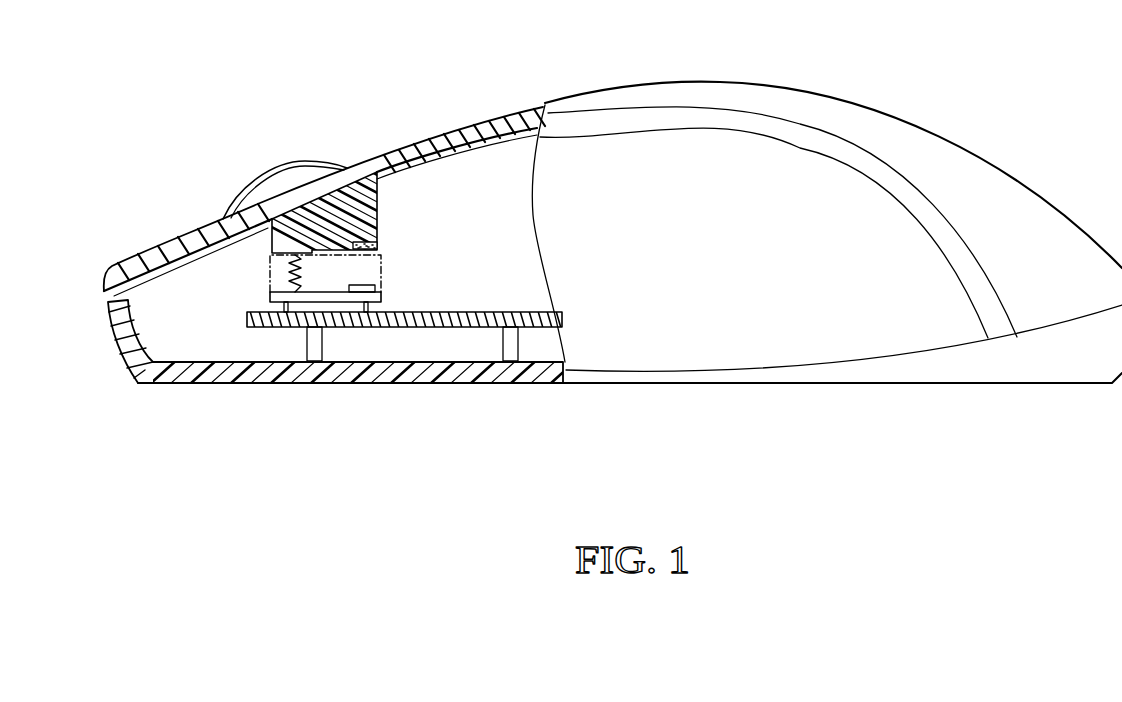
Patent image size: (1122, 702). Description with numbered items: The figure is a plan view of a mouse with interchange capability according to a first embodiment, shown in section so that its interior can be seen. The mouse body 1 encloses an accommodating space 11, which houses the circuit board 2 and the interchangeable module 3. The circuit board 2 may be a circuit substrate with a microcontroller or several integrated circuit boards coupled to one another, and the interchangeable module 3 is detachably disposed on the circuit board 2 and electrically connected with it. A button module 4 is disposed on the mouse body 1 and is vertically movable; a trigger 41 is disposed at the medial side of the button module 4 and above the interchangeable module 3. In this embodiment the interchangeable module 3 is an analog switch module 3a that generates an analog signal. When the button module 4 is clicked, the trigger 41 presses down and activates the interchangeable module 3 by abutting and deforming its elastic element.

The mouse body 1 is at (281, 395).
The circuit board 2 is at (487, 300).
The interchangeable module 3 is at (180, 273).
The analog switch module 3a is at (256, 287).
The button module 4 is at (378, 139).
The trigger 41 is at (377, 218).
The accommodating space 11 is at (487, 170).